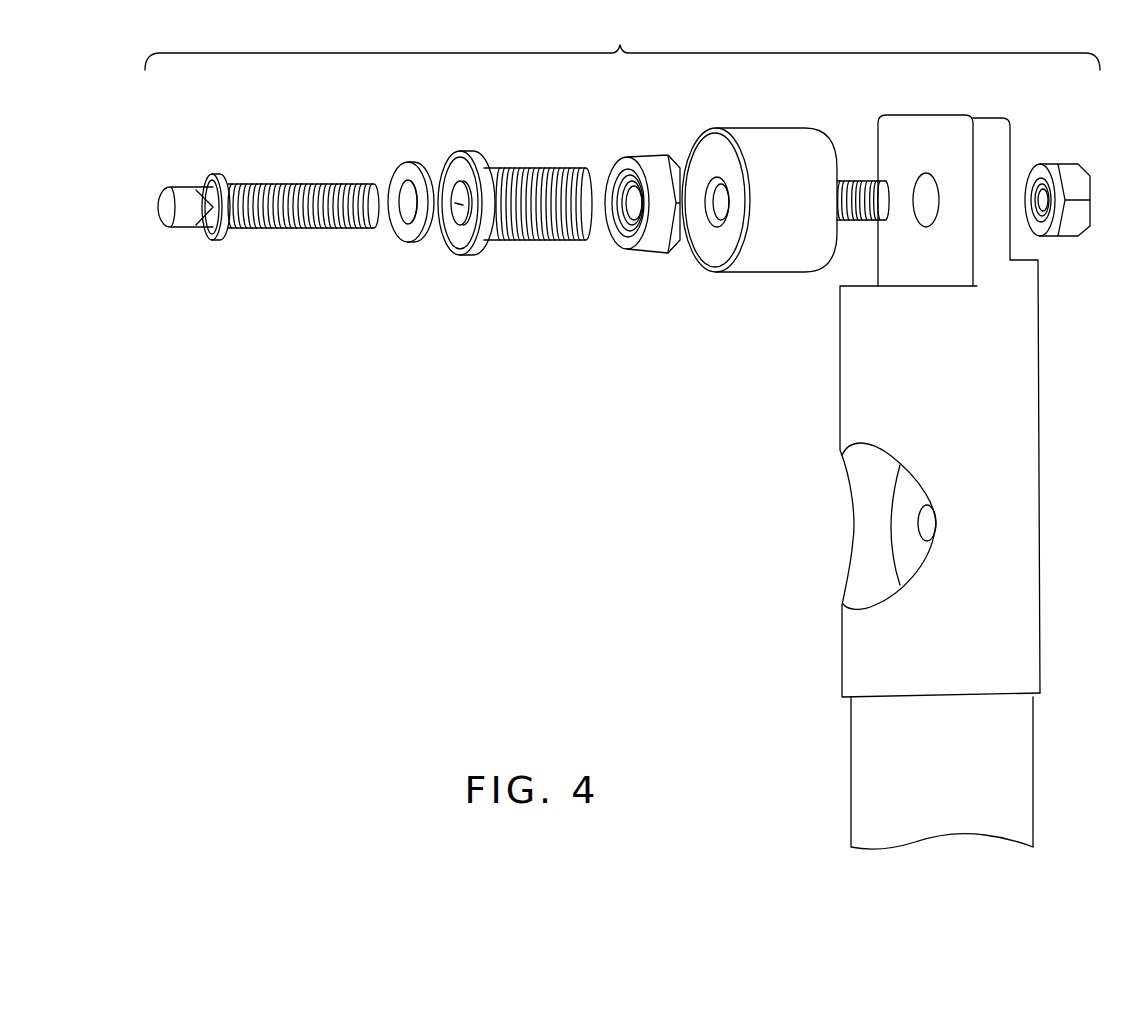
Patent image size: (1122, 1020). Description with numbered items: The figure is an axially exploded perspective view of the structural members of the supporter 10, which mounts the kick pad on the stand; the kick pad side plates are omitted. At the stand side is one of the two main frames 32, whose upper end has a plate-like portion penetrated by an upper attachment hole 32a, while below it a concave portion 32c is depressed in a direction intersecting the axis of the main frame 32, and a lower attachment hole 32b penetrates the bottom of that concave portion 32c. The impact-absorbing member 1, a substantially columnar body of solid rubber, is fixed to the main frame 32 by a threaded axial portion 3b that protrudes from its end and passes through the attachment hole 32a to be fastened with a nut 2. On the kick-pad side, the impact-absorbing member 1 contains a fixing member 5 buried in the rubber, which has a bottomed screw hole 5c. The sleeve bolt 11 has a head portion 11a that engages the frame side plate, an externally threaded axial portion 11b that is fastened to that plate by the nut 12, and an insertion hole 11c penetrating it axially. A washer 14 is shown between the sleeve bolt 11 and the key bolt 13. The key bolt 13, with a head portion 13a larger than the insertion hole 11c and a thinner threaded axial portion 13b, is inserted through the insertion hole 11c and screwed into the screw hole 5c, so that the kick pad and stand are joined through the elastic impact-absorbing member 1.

The supporter 10 is at (620, 47).
The key bolt 13 is at (205, 97).
The head portion 13a is at (214, 178).
The axial portion 13b is at (265, 183).
The washer 14 is at (413, 163).
The sleeve bolt 11 is at (558, 97).
The head portion 11a is at (480, 152).
The axial portion 11b is at (532, 168).
The insertion hole 11c is at (457, 250).
The nut 12 is at (650, 158).
The impact-absorbing member 1 is at (774, 140).
The fixing member 5 is at (714, 145).
The screw hole 5c is at (706, 226).
The axial portion 3b is at (846, 179).
The nut 2 is at (1072, 170).
The main frame 32 is at (1024, 739).
The attachment hole 32a is at (925, 172).
The attachment hole 32b is at (920, 528).
The concave portion 32c is at (852, 482).